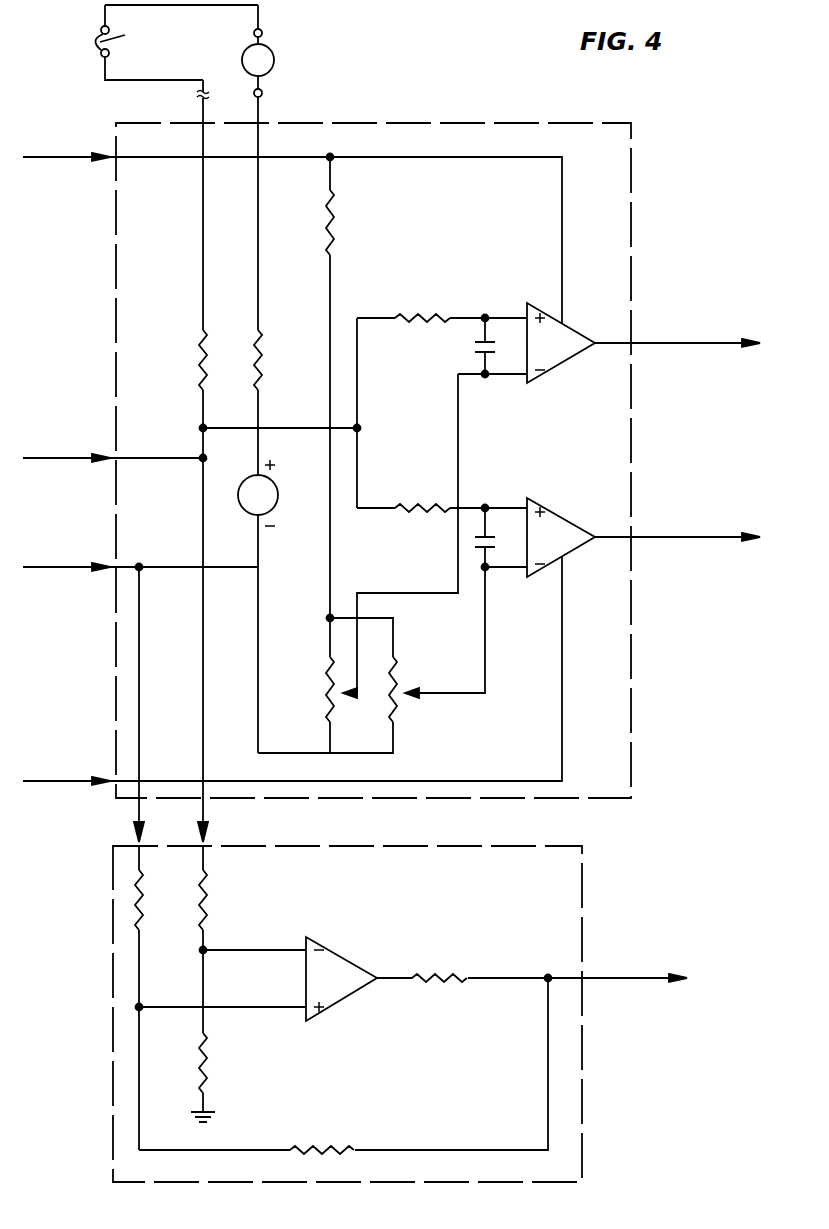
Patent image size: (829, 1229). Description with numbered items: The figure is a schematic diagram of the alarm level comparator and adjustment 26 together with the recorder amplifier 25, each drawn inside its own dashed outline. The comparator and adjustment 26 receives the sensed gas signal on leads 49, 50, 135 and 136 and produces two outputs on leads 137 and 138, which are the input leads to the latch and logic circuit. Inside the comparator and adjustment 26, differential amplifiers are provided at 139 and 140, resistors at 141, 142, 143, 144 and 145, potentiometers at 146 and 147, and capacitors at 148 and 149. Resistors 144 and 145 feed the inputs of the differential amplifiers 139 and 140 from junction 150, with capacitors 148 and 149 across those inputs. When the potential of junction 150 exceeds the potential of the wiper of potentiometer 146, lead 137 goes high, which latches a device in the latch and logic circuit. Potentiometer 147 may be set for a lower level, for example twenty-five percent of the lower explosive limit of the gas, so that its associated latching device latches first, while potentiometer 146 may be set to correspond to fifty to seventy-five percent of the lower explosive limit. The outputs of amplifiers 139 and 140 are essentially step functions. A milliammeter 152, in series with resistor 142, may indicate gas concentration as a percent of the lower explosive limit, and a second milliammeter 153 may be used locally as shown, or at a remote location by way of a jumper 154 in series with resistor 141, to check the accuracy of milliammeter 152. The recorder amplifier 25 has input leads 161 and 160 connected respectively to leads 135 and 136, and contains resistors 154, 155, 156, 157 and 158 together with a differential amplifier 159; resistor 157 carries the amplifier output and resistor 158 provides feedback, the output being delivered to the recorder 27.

The comparator and adjustment 26 is at (375, 123).
The recorder amplifier 25 is at (582, 940).
The recorder 27 is at (620, 985).
The lead 49 is at (62, 153).
The lead 50 is at (60, 777).
The lead 135 is at (55, 472).
The lead 136 is at (55, 582).
The lead 137 is at (692, 345).
The lead 138 is at (674, 530).
The differential amplifier 139 is at (546, 382).
The differential amplifier 140 is at (552, 508).
The resistor 141 is at (200, 352).
The resistor 142 is at (258, 345).
The resistor 143 is at (340, 216).
The resistor 144 is at (423, 314).
The resistor 145 is at (406, 506).
The potentiometer 146 is at (327, 695).
The potentiometer 147 is at (408, 702).
The capacitor 148 is at (478, 344).
The capacitor 149 is at (480, 555).
The junction 150 is at (359, 430).
The milliammeter 152 is at (278, 486).
The milliammeter 153 is at (274, 56).
The jumper / resistor 154 is at (116, 44).
The resistor 155 is at (210, 896).
The resistor 156 is at (210, 1056).
The resistor 157 is at (450, 972).
The resistor 158 is at (332, 1144).
The differential amplifier 159 is at (348, 962).
The input lead 160 is at (132, 818).
The input lead 161 is at (208, 818).